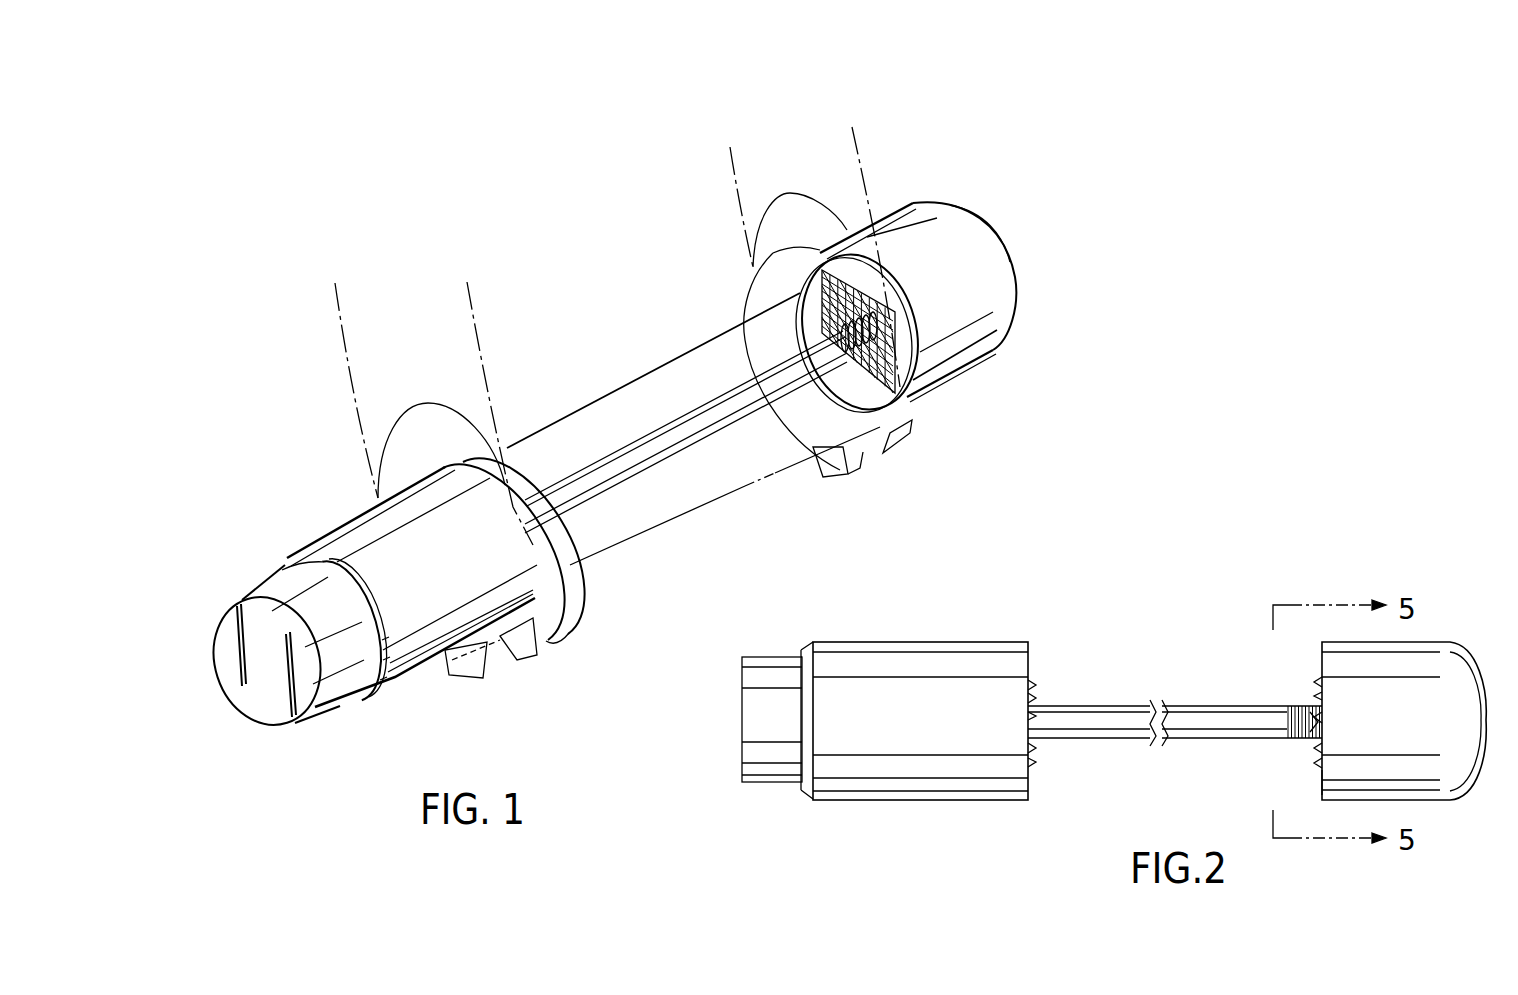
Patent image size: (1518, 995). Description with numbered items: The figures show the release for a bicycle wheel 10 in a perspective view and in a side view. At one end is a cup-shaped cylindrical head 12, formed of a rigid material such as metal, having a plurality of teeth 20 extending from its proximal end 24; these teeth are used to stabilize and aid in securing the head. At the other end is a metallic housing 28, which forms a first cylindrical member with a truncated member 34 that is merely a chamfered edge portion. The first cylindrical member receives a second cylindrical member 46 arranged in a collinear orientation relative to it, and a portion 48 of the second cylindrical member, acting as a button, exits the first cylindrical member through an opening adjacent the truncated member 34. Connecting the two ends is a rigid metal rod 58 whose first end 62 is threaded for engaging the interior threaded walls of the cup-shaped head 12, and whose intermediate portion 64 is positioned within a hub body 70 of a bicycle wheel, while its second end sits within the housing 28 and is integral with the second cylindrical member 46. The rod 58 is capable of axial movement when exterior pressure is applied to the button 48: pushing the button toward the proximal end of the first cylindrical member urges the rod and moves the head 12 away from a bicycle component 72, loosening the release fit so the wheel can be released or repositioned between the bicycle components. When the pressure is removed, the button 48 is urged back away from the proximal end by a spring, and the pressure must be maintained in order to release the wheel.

In FIG. 1, the release for a bicycle wheel 10 is at (313, 457).
In FIG. 1, the cup-shaped cylindrical head 12 is at (1005, 236).
In FIG. 2, the cup-shaped cylindrical head 12 is at (1416, 642).
In FIG. 2, the teeth 20 is at (1033, 685).
In FIG. 2, the proximal end 24 is at (1318, 787).
In FIG. 1, the housing 28 is at (417, 675).
In FIG. 2, the housing 28 is at (878, 642).
In FIG. 2, the truncated member 34 is at (810, 643).
In FIG. 1, the second cylindrical member 46 is at (333, 705).
In FIG. 2, the portion of the second cylindrical member 48 is at (773, 782).
In FIG. 2, the rigid rod 58 is at (1142, 697).
In FIG. 2, the first end 62 is at (1312, 708).
In FIG. 1, the intermediate portion 64 is at (662, 447).
In FIG. 2, the intermediate portion 64 is at (1158, 738).
In FIG. 1, the hub body 70 is at (655, 359).
In FIG. 1, the bicycle component 72 is at (356, 378).